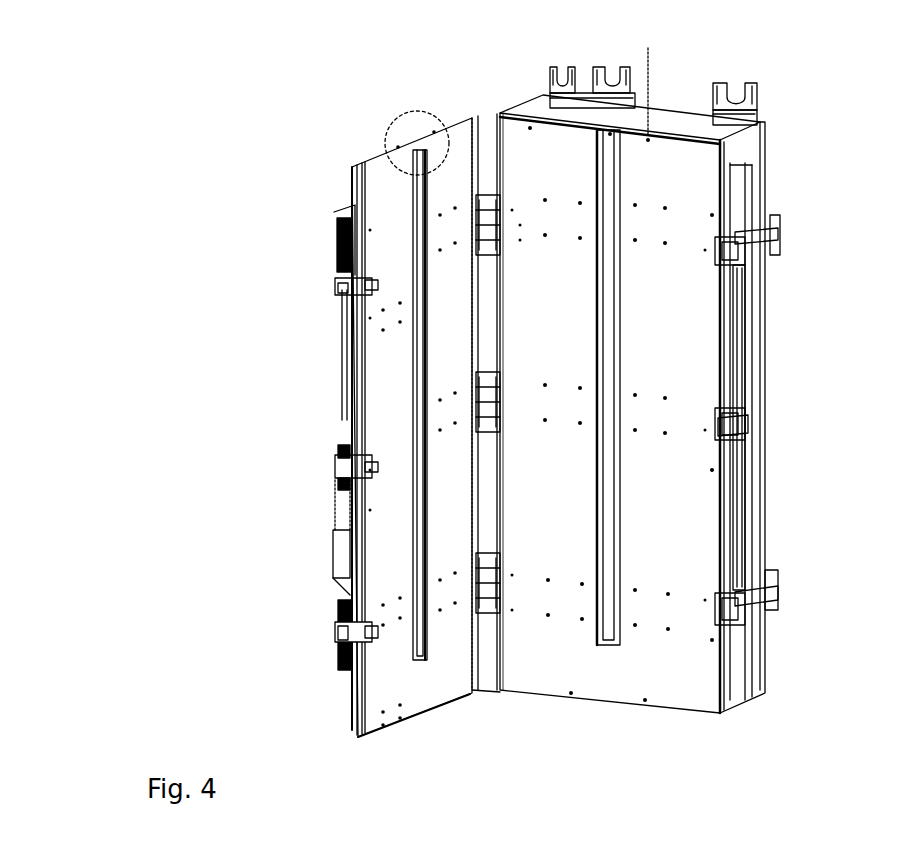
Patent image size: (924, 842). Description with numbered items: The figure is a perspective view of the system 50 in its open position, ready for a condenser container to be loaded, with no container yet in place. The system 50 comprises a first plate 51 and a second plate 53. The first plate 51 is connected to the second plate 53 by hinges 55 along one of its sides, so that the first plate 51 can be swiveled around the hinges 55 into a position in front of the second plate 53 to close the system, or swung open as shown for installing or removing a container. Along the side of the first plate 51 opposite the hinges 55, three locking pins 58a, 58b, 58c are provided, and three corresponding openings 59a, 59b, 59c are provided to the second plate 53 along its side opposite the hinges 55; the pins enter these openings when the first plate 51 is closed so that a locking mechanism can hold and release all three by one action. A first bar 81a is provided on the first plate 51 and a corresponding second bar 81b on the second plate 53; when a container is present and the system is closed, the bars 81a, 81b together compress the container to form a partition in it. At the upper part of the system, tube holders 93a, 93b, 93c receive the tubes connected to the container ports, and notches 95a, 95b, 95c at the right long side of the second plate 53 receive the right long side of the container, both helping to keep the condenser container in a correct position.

The system 50 is at (204, 219).
The first plate 51 is at (362, 348).
The second plate 53 is at (723, 480).
The hinges 55 is at (478, 195).
The locking pin 58a is at (340, 290).
The locking pin 58b is at (345, 473).
The locking pin 58c is at (345, 675).
The opening 59a is at (747, 245).
The opening 59b is at (740, 432).
The opening 59c is at (733, 607).
The first bar 81a is at (413, 545).
The second bar 81b is at (622, 360).
The tube holder 93a is at (560, 68).
The tube holder 93b is at (618, 68).
The tube holder 93c is at (745, 82).
The notch 95a is at (720, 243).
The notch 95b is at (718, 418).
The notch 95c is at (715, 613).